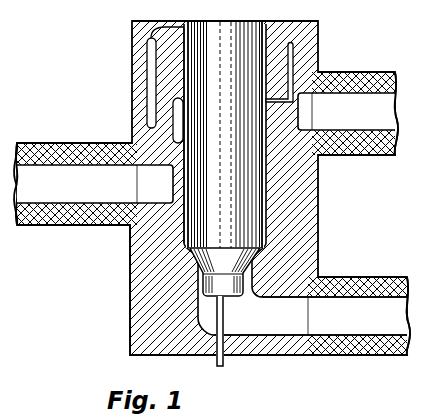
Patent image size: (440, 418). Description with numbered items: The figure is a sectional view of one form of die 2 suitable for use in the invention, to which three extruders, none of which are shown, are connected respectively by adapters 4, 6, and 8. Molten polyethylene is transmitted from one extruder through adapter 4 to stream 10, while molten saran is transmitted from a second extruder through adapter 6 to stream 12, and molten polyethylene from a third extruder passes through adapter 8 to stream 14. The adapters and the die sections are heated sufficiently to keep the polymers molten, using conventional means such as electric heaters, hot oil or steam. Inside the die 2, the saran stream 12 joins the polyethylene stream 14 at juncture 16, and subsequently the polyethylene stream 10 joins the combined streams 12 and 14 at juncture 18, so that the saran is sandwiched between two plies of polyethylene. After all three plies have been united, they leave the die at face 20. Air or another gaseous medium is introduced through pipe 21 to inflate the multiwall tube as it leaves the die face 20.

The die 2 is at (330, 220).
The adapter 4 is at (384, 72).
The adapter 6 is at (48, 143).
The adapter 8 is at (399, 355).
The stream 10 is at (317, 34).
The stream 12 is at (172, 139).
The stream 14 is at (143, 295).
The juncture 16 is at (183, 88).
The juncture 18 is at (182, 26).
The die face 20 is at (237, 24).
The pipe 21 is at (220, 366).